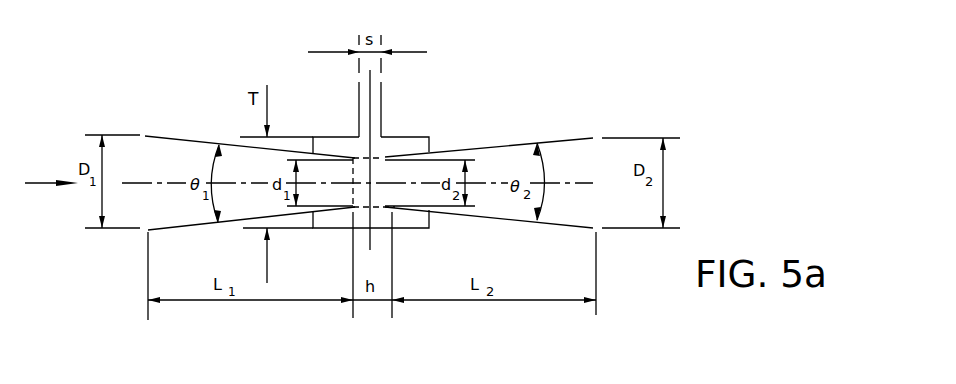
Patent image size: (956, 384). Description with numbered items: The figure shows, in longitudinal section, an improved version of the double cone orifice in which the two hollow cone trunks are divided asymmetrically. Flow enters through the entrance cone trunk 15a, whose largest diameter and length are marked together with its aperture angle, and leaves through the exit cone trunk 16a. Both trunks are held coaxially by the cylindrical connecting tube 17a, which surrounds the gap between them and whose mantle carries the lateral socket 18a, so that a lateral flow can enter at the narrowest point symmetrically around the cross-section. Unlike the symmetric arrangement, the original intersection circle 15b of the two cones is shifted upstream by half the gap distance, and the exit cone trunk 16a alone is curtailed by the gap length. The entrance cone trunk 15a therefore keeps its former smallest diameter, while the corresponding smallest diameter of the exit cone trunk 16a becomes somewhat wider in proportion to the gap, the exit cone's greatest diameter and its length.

The entrance cone trunk 15a is at (157, 200).
The original intersection circle 15b is at (352, 190).
The exit cone trunk 16a is at (567, 150).
The cylindrical connecting tube 17a is at (340, 143).
The lateral socket 18a is at (377, 99).